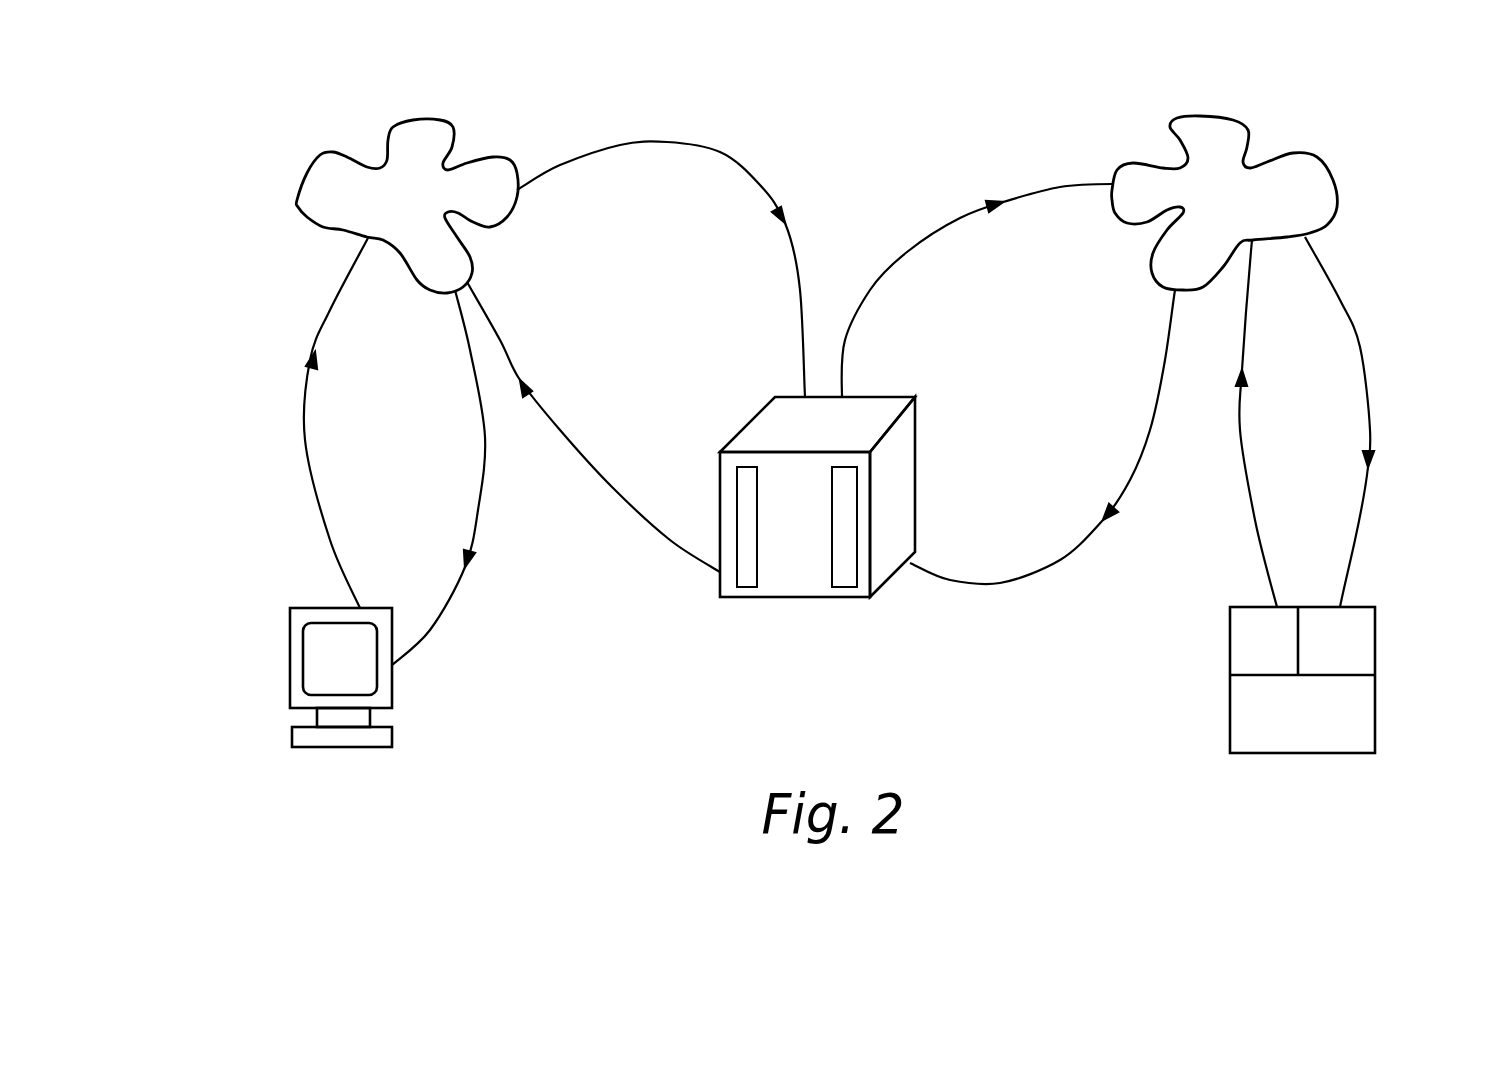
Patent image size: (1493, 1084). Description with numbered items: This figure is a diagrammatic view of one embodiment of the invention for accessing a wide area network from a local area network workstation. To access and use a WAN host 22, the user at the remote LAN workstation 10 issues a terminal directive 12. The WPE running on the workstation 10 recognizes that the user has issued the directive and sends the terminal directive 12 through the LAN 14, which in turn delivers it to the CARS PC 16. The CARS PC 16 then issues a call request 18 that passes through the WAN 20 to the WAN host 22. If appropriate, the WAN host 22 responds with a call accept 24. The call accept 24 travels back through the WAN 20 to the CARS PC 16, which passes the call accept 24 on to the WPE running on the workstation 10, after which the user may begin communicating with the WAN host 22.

The LAN workstation 10 is at (290, 685).
The terminal directive 12 is at (720, 152).
The LAN 14 is at (297, 190).
The CARS PC 16 is at (915, 527).
The call request 18 is at (907, 252).
The WAN 20 is at (1325, 177).
The WAN host 22 is at (1375, 718).
The call accept 24 is at (477, 525).